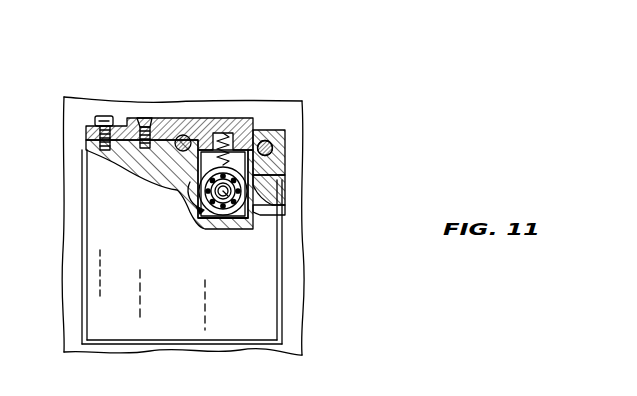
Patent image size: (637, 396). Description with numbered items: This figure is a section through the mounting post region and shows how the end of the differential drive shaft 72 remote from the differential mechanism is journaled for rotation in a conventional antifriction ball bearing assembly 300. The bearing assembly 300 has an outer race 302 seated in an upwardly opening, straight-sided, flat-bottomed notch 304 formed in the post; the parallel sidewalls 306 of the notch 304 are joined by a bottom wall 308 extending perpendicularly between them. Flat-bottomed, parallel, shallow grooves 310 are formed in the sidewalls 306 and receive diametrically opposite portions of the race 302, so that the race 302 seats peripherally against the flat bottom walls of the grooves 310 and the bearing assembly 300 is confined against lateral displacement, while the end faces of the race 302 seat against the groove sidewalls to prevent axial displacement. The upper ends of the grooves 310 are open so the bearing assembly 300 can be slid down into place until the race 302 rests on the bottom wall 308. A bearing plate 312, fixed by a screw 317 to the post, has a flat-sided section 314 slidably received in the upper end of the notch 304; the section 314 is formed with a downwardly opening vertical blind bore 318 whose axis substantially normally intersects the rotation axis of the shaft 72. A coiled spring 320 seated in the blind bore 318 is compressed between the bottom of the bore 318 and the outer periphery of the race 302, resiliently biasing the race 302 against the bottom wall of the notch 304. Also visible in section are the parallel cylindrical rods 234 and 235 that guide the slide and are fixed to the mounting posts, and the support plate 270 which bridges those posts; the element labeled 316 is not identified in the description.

The cover plate 316 is at (178, 118).
The support plate 270 is at (133, 119).
The screw 317 is at (148, 119).
The grooves 310 is at (202, 127).
The bearing plate 312 is at (223, 116).
The blind bore 318 is at (247, 129).
The flat-sided section 314 is at (270, 128).
The cylindrical rod 234 is at (272, 148).
The coiled spring 320 is at (282, 172).
The notch 304 is at (240, 188).
The differential drive shaft 72 is at (247, 199).
The outer race 302 is at (262, 216).
The cylindrical rod 235 is at (182, 160).
The sidewalls 306 is at (190, 184).
The antifriction ball bearing assembly 300 is at (200, 211).
The bottom wall 308 is at (229, 216).